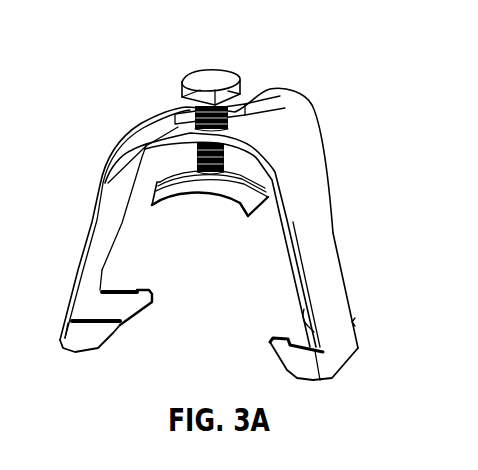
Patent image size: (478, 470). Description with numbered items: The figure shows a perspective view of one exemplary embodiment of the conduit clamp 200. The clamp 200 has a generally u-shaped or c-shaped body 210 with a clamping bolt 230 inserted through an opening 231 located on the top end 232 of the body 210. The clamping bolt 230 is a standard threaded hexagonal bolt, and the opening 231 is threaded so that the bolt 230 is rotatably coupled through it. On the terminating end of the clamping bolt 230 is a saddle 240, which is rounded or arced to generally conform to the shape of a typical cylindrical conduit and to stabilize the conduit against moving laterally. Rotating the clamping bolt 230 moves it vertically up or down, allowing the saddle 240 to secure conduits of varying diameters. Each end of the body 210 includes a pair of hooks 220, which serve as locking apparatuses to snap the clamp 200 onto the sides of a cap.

The conduit clamp 200 is at (114, 38).
The body 210 is at (340, 232).
The hooks 220 is at (87, 348).
The clamping bolt 230 is at (233, 68).
The opening 231 is at (231, 115).
The top end 232 is at (280, 150).
The saddle 240 is at (160, 181).